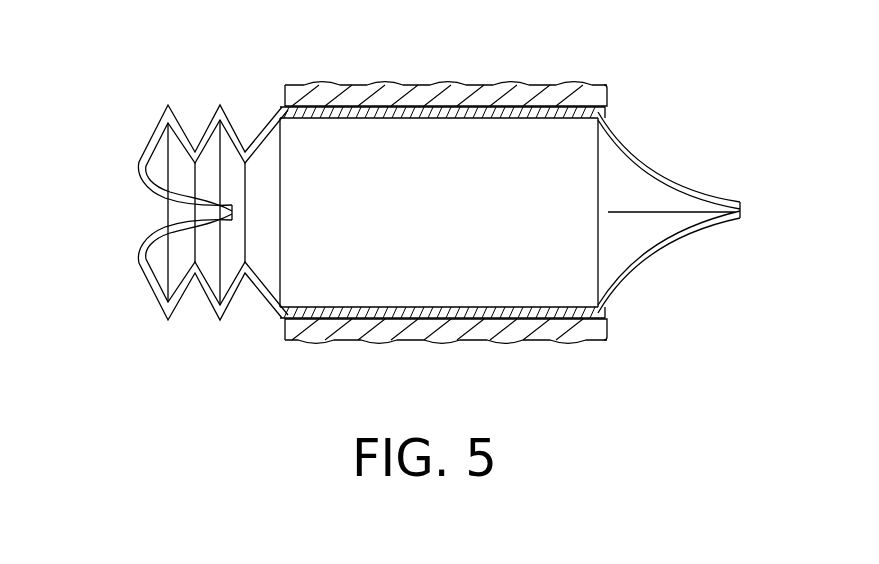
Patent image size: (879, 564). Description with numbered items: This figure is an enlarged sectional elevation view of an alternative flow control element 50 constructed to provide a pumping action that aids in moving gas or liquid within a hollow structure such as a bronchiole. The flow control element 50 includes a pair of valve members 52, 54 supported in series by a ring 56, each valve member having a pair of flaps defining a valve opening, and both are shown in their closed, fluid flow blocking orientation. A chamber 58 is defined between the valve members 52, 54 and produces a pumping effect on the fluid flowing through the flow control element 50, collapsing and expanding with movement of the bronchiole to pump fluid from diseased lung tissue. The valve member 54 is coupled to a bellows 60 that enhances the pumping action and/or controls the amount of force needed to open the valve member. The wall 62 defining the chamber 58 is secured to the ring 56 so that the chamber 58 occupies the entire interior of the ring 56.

The flow control element 50 is at (125, 435).
The valve member 52 is at (685, 238).
The valve member 54 is at (140, 272).
The ring 56 is at (457, 83).
The chamber 58 is at (462, 220).
The bellows 60 is at (202, 123).
The wall 62 is at (478, 308).